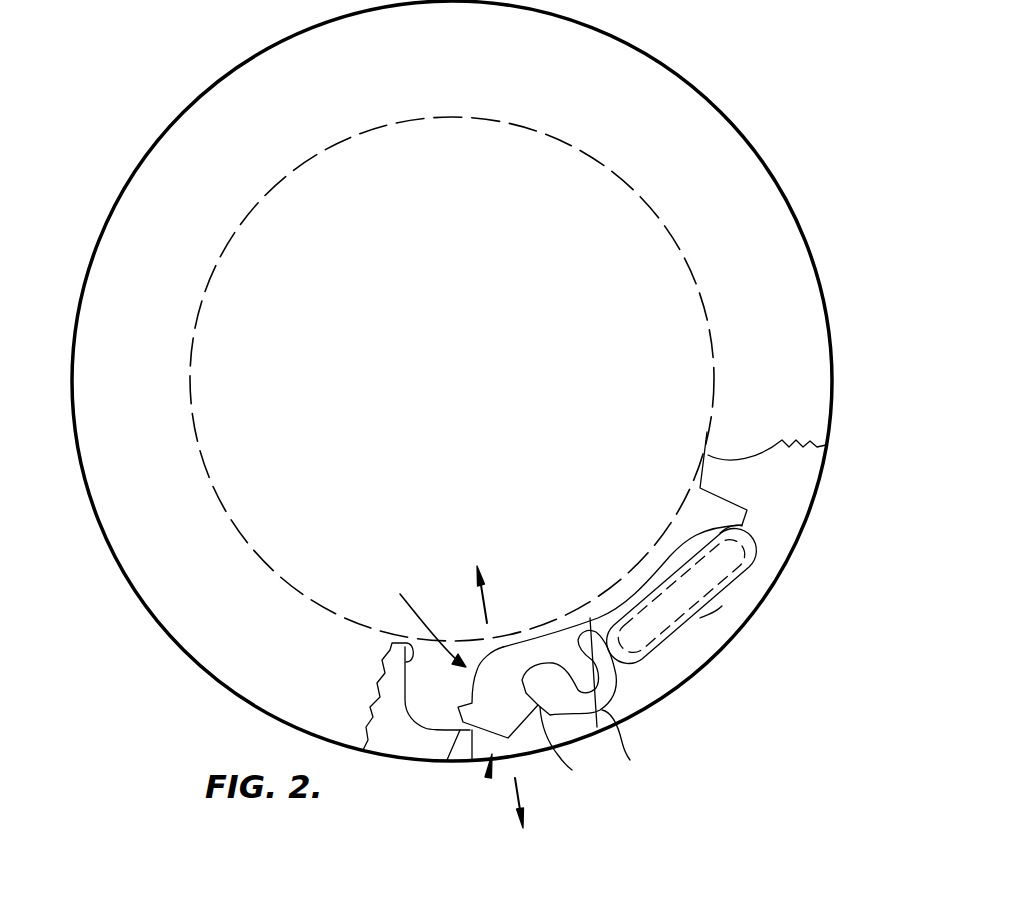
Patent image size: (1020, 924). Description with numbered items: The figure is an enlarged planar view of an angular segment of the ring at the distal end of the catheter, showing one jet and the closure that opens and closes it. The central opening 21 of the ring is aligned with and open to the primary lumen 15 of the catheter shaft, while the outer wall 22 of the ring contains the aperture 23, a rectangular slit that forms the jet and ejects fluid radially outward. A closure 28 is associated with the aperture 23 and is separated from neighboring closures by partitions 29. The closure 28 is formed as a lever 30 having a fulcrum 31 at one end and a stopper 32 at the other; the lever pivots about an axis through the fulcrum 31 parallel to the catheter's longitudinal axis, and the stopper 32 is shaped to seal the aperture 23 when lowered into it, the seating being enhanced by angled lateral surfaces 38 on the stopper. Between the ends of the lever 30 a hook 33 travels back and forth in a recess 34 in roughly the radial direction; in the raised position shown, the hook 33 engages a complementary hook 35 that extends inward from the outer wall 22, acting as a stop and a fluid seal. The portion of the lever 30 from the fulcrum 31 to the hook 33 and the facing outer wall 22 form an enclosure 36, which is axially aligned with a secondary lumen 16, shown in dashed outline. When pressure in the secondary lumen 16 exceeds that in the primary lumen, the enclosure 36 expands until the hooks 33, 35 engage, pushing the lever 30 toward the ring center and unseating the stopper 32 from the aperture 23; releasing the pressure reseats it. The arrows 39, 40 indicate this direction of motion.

The primary lumen 15 is at (657, 225).
The secondary lumen 16 is at (717, 577).
The central opening 21 is at (441, 389).
The outer wall 22 is at (755, 150).
The aperture 23 is at (488, 776).
The closure 28 is at (418, 617).
The partition 29 is at (700, 488).
The lever 30 is at (620, 600).
The fulcrum 31 is at (753, 535).
The stopper 32 is at (497, 710).
The hook 33 is at (547, 713).
The recess 34 is at (610, 706).
The complementary hook 35 is at (590, 618).
The enclosure 36 is at (717, 610).
The angled lateral surfaces 38 is at (447, 760).
The arrow 39 is at (483, 582).
The arrow 40 is at (519, 800).